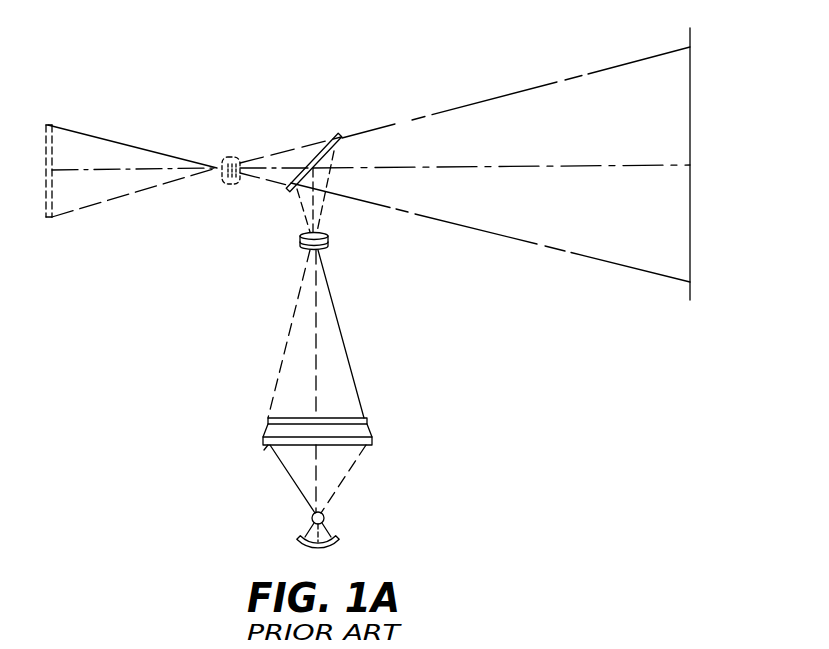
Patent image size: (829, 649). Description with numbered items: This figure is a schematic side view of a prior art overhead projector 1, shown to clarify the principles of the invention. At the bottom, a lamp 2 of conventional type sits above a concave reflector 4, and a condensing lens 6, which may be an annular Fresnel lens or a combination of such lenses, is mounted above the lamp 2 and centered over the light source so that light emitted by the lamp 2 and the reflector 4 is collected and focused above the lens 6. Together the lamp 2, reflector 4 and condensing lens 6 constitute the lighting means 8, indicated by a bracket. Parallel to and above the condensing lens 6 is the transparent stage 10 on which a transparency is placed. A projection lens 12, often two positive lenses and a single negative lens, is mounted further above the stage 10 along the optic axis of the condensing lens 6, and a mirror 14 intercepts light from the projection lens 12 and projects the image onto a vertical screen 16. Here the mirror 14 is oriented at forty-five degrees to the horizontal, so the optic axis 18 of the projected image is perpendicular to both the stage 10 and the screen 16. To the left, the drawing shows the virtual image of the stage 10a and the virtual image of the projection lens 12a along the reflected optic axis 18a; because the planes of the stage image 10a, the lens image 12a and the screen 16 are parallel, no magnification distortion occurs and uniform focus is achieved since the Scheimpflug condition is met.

The overhead projector 1 is at (355, 110).
The lamp 2 is at (326, 517).
The concave reflector 4 is at (298, 541).
The condensing lens 6 is at (278, 447).
The lighting means 8 is at (237, 432).
The transparent stage 10 is at (350, 418).
The virtual image of the stage 10a is at (58, 216).
The projection lens 12 is at (329, 243).
The virtual image of the projection lens 12a is at (230, 155).
The mirror 14 is at (336, 134).
The vertical screen 16 is at (692, 38).
The optic axis 18 is at (519, 165).
The reflected optic axis 18a is at (125, 170).